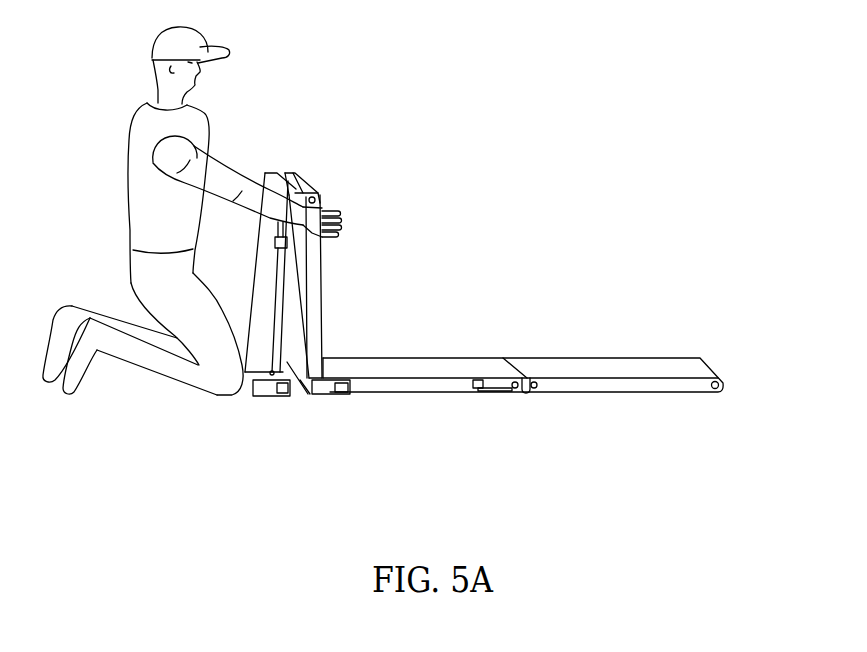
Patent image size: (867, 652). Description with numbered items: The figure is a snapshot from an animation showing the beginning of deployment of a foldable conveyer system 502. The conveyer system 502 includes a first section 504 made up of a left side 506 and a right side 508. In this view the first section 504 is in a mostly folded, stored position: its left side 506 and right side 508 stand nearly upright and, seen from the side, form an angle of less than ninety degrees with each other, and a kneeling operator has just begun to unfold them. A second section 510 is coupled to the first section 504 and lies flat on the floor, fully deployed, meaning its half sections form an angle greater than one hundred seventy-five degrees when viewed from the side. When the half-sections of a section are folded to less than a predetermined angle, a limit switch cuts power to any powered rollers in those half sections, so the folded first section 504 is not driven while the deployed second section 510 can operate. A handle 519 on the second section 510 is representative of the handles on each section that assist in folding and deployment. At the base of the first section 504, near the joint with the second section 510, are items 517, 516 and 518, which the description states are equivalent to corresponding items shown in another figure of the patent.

The conveyer system 502 is at (715, 110).
The first section 504 is at (320, 160).
The left side 506 is at (257, 268).
The right side 508 is at (322, 283).
The second section 510 is at (715, 347).
The item equivalent to item 322 516 is at (327, 392).
The item equivalent to item 340 517 is at (310, 393).
The item equivalent to item 319 518 is at (346, 382).
The handle 519 is at (497, 392).